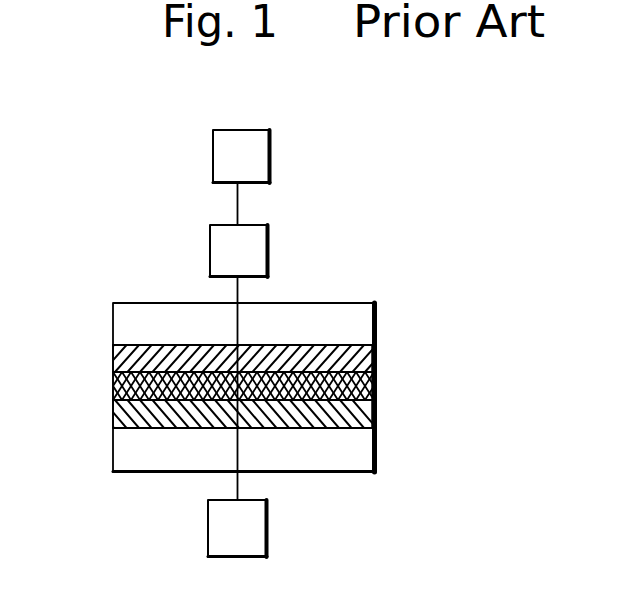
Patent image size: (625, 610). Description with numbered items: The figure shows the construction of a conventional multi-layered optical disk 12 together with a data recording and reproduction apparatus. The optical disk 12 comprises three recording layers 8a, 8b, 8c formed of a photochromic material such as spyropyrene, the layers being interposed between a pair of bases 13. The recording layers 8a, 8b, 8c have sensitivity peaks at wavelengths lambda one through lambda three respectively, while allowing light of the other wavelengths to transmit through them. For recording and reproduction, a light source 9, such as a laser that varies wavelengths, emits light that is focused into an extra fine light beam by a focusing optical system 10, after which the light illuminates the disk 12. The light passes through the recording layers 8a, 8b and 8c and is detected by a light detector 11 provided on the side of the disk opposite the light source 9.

The light source 9 is at (258, 162).
The focusing optical system 10 is at (255, 257).
The light detector 11 is at (255, 532).
The optical disk 12 is at (113, 332).
The bases 13 is at (320, 453).
The recording layer 8a is at (372, 360).
The recording layer 8b is at (372, 387).
The recording layer 8c is at (372, 420).